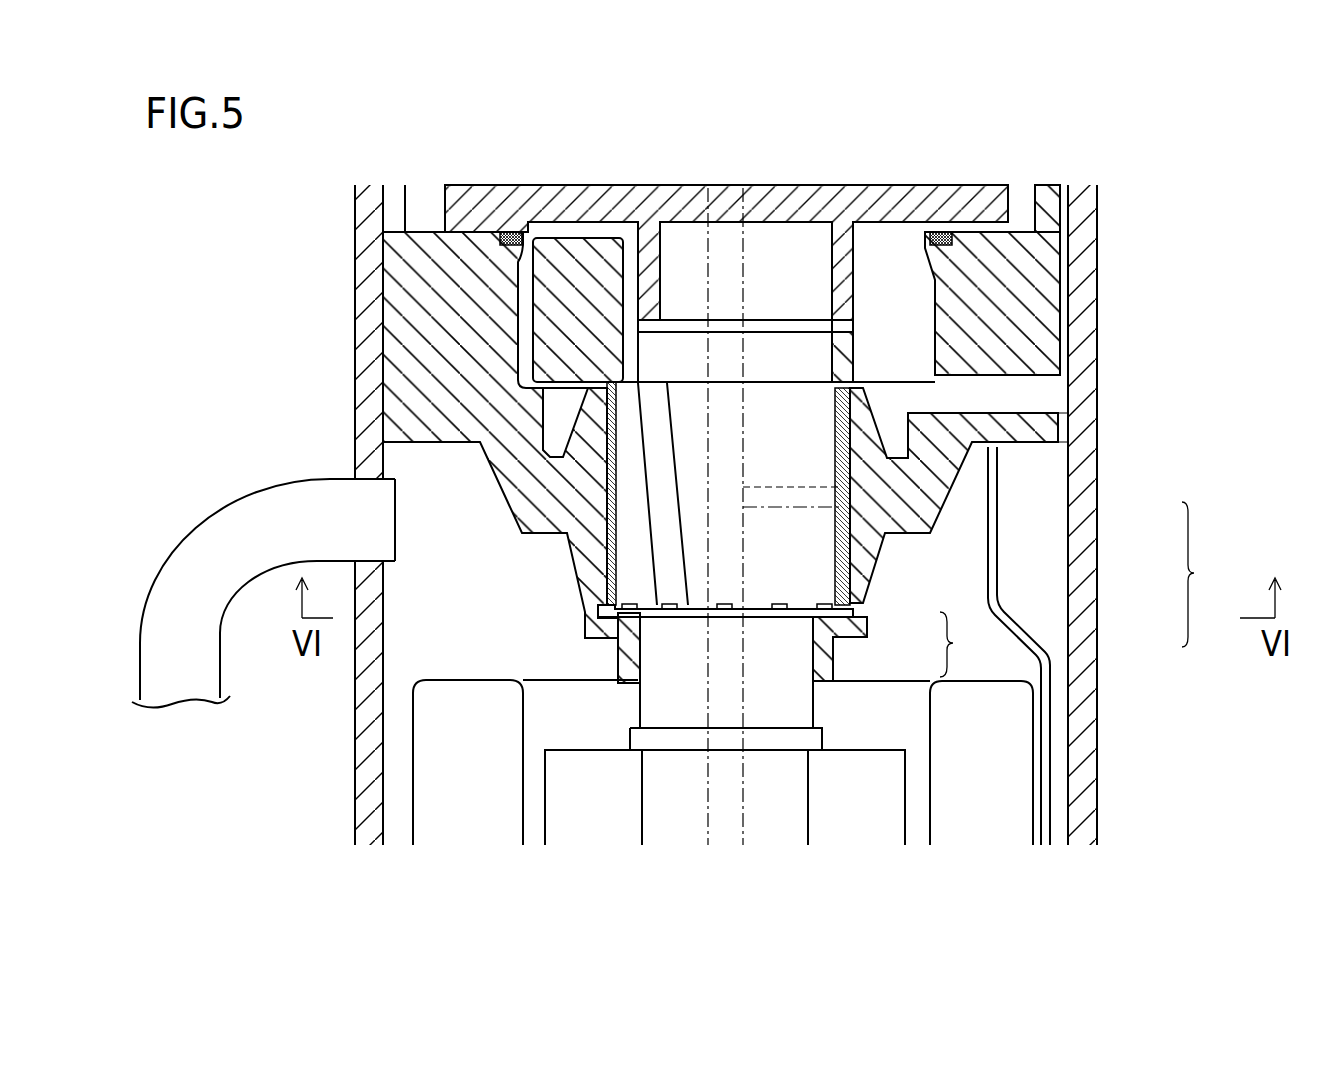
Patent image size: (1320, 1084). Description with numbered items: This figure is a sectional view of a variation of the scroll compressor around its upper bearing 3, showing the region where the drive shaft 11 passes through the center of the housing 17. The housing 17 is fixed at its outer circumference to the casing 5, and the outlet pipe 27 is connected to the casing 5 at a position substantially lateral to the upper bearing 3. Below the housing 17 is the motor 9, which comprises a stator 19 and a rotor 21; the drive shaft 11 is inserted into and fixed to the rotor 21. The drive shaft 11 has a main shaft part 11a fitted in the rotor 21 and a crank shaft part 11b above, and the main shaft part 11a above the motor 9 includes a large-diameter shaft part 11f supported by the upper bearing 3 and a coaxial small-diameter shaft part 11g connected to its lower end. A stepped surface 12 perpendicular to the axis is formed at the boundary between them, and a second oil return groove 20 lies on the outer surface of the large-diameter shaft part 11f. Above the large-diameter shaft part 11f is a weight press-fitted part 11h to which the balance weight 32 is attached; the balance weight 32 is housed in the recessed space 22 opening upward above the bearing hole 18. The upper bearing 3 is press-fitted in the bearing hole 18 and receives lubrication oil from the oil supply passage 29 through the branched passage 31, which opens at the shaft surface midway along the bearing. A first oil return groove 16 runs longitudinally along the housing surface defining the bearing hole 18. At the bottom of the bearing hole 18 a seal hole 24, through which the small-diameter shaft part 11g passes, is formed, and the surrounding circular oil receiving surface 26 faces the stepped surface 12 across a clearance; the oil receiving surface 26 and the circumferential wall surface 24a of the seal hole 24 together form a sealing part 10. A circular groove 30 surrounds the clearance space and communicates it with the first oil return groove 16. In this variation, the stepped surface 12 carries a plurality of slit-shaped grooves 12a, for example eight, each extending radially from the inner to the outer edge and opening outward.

The upper bearing 3 is at (607, 427).
The casing 5 is at (355, 233).
The motor 9 is at (402, 748).
The sealing part 10 is at (964, 644).
The drive shaft 11 is at (841, 729).
The main shaft part 11a is at (1117, 646).
The crank shaft part 11b is at (807, 357).
The large-diameter shaft part 11f is at (790, 555).
The small-diameter shaft part 11g is at (797, 702).
The weight press-fitted part 11h is at (962, 452).
The stepped surface 12 is at (618, 655).
The slit-shaped groove 12a is at (777, 617).
The first oil return groove 16 is at (850, 493).
The housing 17 is at (1004, 377).
The bearing hole 18 is at (618, 538).
The stator 19 is at (463, 680).
The second oil return groove 20 is at (665, 580).
The rotor 21 is at (563, 748).
The recessed space 22 is at (893, 277).
The seal hole 24 is at (808, 660).
The circumferential wall surface 24a is at (823, 659).
The oil receiving surface 26 is at (867, 622).
The outlet pipe 27 is at (247, 508).
The oil supply passage 29 is at (708, 815).
The circular groove 30 is at (853, 614).
The branched passage 31 is at (797, 491).
The balance weight 32 is at (585, 258).